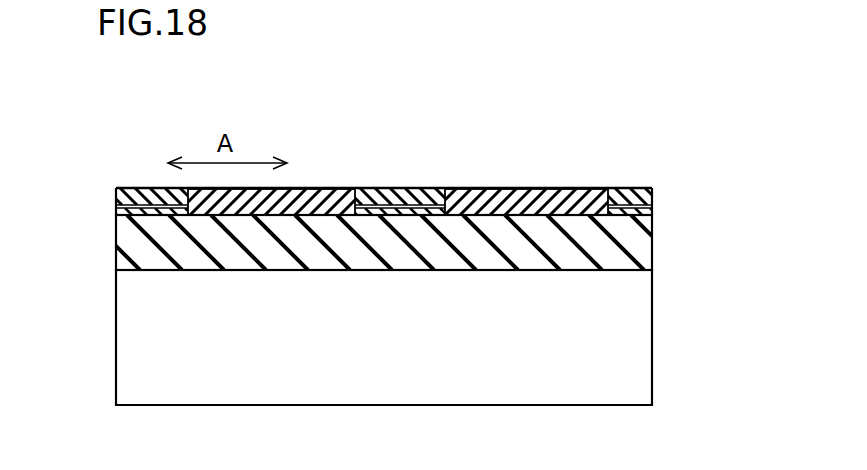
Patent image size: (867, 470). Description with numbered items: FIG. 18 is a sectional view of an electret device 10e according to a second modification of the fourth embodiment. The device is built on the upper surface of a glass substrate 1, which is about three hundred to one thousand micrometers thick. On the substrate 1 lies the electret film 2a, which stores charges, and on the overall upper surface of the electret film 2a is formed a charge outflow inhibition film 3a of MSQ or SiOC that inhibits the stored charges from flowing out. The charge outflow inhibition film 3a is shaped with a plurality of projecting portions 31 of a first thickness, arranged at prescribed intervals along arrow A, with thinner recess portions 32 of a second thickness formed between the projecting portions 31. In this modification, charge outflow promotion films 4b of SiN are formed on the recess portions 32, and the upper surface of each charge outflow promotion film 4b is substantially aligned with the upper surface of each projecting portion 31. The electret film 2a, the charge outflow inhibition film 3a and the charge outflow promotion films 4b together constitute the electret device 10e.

The substrate 1 is at (636, 328).
The electret film 2a is at (635, 242).
The charge outflow inhibition film 3a is at (640, 200).
The charge outflow promotion film 4b is at (445, 188).
The projecting portion 31 is at (310, 188).
The recess portion 32 is at (406, 188).
The electret device 10e is at (743, 155).